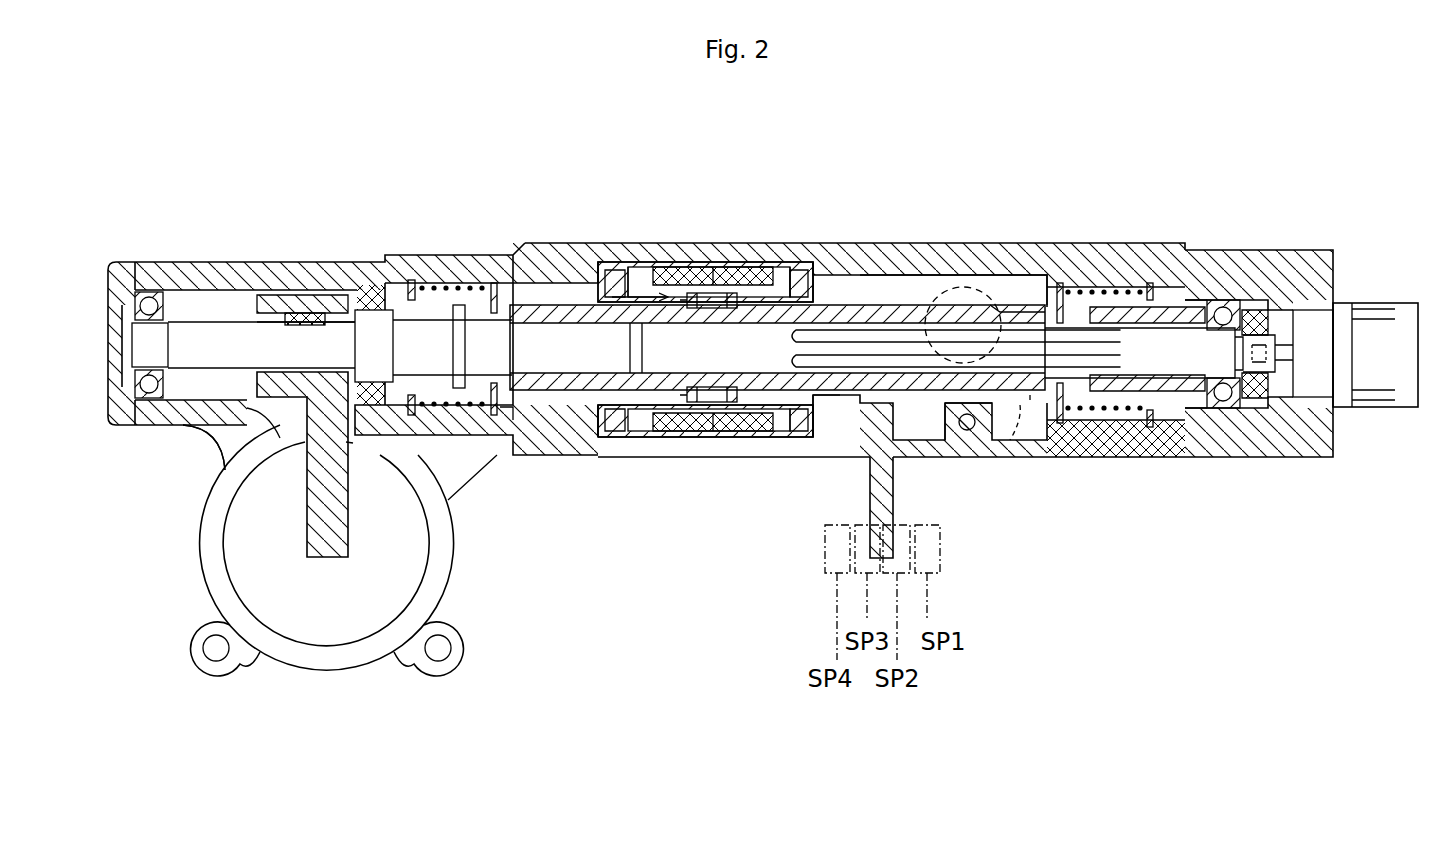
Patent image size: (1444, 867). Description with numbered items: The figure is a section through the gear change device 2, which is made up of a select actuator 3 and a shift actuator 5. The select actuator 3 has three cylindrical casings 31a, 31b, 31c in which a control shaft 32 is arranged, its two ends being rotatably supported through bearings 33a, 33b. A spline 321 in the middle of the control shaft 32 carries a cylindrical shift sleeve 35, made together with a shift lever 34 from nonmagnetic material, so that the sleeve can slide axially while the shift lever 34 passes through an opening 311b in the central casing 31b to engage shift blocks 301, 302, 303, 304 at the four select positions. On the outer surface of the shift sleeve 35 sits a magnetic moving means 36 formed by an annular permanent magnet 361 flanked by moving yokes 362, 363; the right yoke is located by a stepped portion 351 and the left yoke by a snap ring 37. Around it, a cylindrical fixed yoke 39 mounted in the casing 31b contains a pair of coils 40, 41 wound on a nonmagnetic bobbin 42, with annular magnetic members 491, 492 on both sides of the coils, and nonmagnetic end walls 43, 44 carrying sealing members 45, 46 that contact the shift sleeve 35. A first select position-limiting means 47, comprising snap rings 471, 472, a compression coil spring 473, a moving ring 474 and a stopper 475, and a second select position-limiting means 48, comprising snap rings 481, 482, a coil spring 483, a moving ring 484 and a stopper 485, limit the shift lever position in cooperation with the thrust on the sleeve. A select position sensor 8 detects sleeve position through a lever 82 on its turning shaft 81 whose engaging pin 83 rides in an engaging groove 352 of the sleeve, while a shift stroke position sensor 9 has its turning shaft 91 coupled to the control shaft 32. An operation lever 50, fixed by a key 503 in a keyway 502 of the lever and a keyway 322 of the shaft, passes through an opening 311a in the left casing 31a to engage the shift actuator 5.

The gear change device 2 is at (540, 162).
The select actuator 3 is at (750, 237).
The shift actuator 5 is at (178, 608).
The select position sensor 8 is at (945, 290).
The shift stroke position sensor 9 is at (1380, 300).
The casing 31a is at (218, 262).
The central casing 31b is at (888, 257).
The casing 31c is at (1281, 257).
The control shaft 32 is at (488, 292).
The bearing 33a is at (143, 283).
The bearing 33b is at (1226, 268).
The shift lever 34 is at (893, 470).
The shift sleeve 35 is at (868, 295).
The magnetic moving means 36 is at (607, 302).
The snap ring 37 is at (632, 338).
The fixed yoke 39 is at (693, 266).
The coil 40 is at (722, 435).
The coil 41 is at (680, 440).
The bobbin 42 is at (640, 268).
The end wall 43 is at (810, 292).
The end wall 44 is at (578, 268).
The sealing member 45 is at (830, 302).
The sealing member 46 is at (547, 283).
The first select position-limiting means 47 is at (1040, 286).
The second select position-limiting means 48 is at (430, 284).
The operation lever 50 is at (305, 497).
The turning shaft 81 is at (970, 322).
The lever 82 is at (1022, 400).
The engaging pin 83 is at (1003, 425).
The turning shaft 91 is at (1280, 457).
The shift block 301 is at (942, 565).
The shift block 302 is at (905, 524).
The shift block 303 is at (862, 524).
The shift block 304 is at (825, 545).
The opening 311a is at (277, 413).
The opening 311b is at (843, 448).
The spline 321 is at (1012, 302).
The keyway 322 is at (272, 347).
The stepped portion 351 is at (760, 285).
The engaging groove 352 is at (967, 432).
The permanent magnet 361 is at (710, 320).
The moving yoke 362 is at (735, 320).
The moving yoke 363 is at (696, 323).
The snap ring 471 is at (1062, 457).
The snap ring 472 is at (1168, 457).
The compression coil spring 473 is at (1142, 457).
The moving ring 474 is at (1110, 457).
The stopper 475 is at (1108, 292).
The snap ring 481 is at (520, 435).
The snap ring 482 is at (412, 418).
The coil spring 483 is at (410, 282).
The moving ring 484 is at (495, 420).
The stopper 485 is at (470, 280).
The magnetic member 491 is at (790, 272).
The magnetic member 492 is at (645, 262).
The keyway 502 is at (275, 300).
The key 503 is at (308, 292).